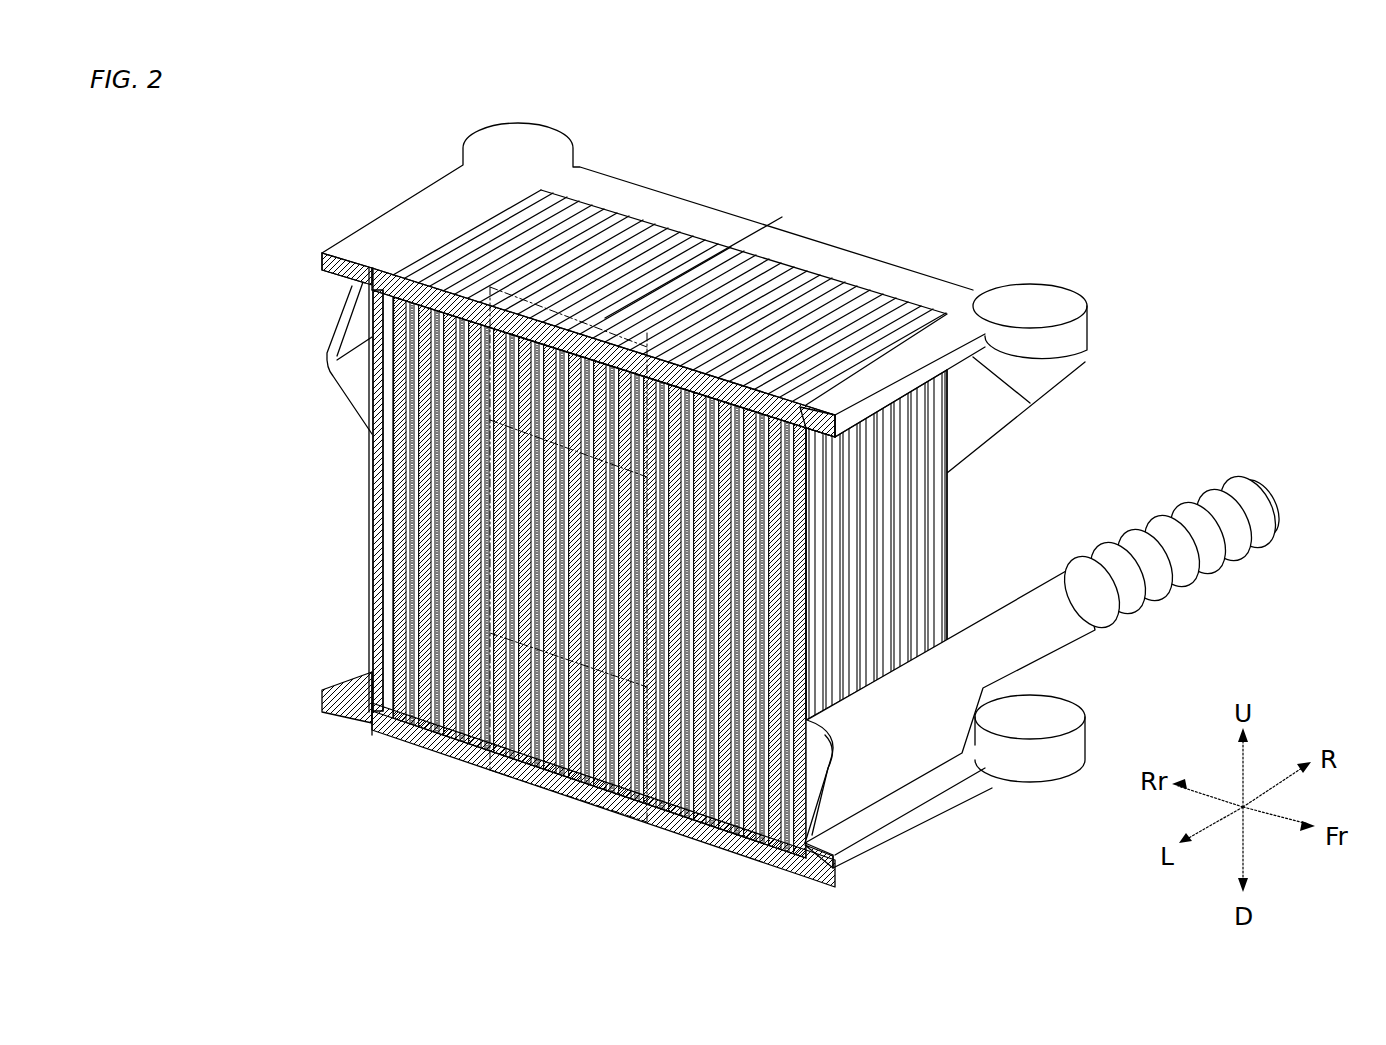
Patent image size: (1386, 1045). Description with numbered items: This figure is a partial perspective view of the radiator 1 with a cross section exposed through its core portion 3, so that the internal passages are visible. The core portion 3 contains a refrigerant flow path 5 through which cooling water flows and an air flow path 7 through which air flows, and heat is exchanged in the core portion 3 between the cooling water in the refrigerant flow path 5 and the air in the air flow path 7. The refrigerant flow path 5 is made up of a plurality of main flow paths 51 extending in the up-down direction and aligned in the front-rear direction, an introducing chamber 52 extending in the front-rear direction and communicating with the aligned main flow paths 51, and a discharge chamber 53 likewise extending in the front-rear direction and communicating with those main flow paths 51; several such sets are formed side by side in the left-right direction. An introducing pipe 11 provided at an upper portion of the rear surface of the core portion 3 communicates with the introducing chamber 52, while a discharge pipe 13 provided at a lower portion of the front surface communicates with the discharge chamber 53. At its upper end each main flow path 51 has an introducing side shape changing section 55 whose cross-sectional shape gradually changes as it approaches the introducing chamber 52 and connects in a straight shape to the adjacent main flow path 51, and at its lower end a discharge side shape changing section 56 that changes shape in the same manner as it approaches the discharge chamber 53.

The radiator 1 is at (1018, 193).
The core portion 3 is at (885, 270).
The refrigerant flow path 5 is at (383, 482).
The air flow path 7 is at (452, 225).
The introducing pipe 11 is at (327, 343).
The discharge pipe 13 is at (843, 773).
The main flow path 51 is at (438, 637).
The introducing chamber 52 is at (552, 210).
The discharge chamber 53 is at (680, 815).
The introducing side shape changing section 55 is at (367, 317).
The discharge side shape changing section 56 is at (350, 680).